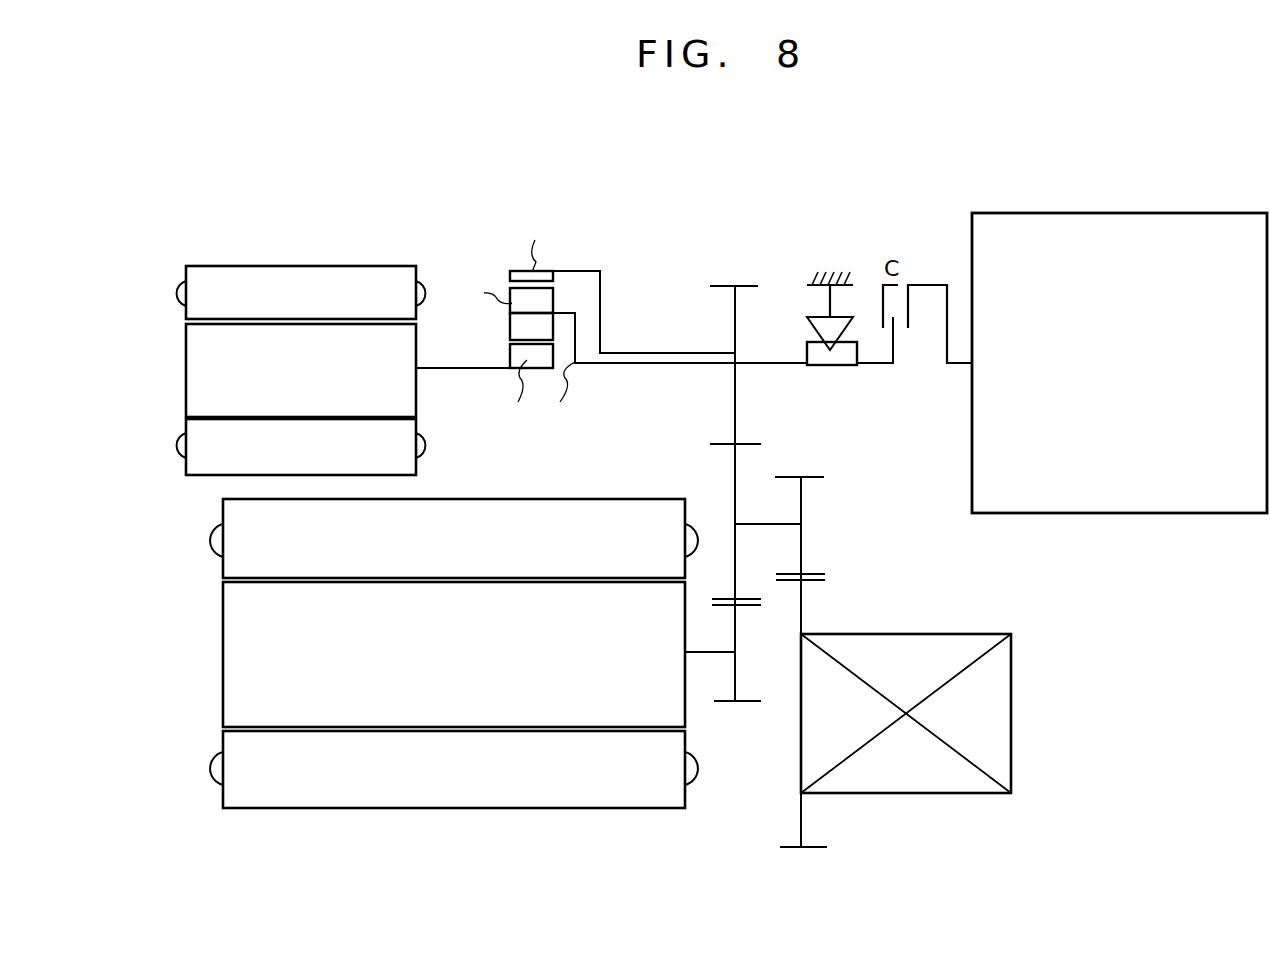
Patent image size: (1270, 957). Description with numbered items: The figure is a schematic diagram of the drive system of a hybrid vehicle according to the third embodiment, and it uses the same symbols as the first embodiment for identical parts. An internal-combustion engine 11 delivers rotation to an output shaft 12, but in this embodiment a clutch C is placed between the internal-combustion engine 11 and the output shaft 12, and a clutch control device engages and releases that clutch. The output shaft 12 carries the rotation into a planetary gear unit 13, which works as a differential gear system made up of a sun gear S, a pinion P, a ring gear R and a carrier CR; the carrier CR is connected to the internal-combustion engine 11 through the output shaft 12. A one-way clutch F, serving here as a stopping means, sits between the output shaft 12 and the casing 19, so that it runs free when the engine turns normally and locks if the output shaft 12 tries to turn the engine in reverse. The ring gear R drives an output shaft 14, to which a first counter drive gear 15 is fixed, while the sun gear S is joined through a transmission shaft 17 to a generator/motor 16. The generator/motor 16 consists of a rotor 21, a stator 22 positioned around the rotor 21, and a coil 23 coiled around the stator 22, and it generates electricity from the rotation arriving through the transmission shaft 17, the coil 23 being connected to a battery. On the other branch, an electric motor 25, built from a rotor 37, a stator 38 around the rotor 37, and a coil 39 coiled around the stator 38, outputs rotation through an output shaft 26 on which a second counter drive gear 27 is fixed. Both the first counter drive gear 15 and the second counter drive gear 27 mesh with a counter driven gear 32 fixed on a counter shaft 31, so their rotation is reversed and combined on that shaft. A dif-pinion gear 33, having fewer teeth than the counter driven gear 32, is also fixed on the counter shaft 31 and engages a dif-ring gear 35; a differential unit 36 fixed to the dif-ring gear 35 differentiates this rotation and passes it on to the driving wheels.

The internal-combustion engine 11 is at (1187, 213).
The output shaft 12 is at (768, 363).
The planetary gear unit 13 is at (565, 253).
The output shaft 14 is at (622, 353).
The first counter drive gear 15 is at (725, 286).
The generator/motor 16 is at (271, 333).
The transmission shaft 17 is at (473, 370).
The casing 19 is at (835, 274).
The rotor 21 is at (190, 368).
The stator 22 is at (208, 270).
The coil 23 is at (180, 282).
The electric motor 25 is at (410, 680).
The output shaft 26 is at (703, 653).
The second counter drive gear 27 is at (752, 701).
The counter shaft 31 is at (752, 524).
The counter driven gear 32 is at (727, 448).
The dif-pinion gear 33 is at (818, 477).
The dif-ring gear 35 is at (818, 580).
The differential unit 36 is at (968, 634).
The rotor 37 is at (228, 667).
The stator 38 is at (228, 505).
The coil 39 is at (208, 538).